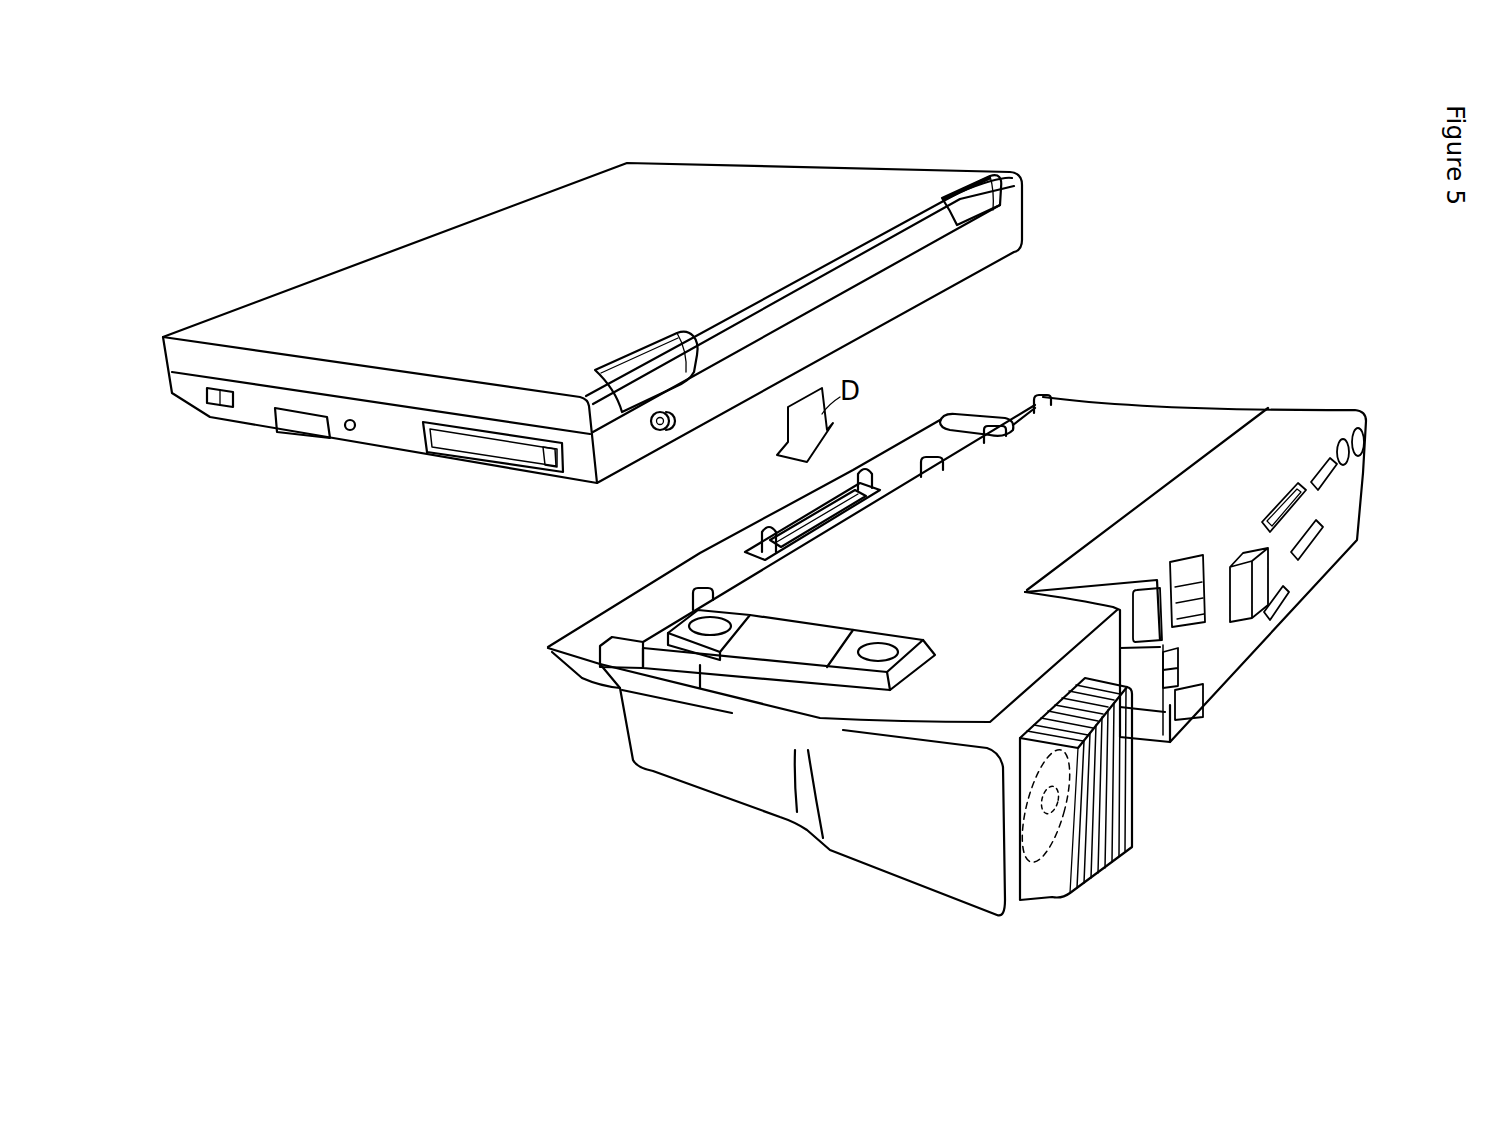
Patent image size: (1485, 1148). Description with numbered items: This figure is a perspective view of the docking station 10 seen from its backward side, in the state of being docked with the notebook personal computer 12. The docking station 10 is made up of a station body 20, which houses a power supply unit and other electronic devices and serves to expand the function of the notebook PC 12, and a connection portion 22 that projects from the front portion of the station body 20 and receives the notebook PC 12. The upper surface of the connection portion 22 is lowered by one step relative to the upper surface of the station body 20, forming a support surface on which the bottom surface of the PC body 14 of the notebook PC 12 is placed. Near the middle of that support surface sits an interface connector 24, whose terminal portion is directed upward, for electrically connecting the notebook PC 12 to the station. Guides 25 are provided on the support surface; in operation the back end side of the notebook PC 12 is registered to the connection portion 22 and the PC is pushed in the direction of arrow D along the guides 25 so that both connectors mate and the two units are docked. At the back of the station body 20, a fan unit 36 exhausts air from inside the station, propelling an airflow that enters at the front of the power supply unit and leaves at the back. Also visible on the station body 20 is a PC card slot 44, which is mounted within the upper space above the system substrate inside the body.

The docking station 10 is at (939, 631).
The notebook personal computer 12 is at (643, 332).
The PC body 14 is at (387, 436).
The station body 20 is at (750, 778).
The connection portion 22 is at (580, 662).
The interface connector 24 is at (800, 513).
The guides 25 is at (975, 437).
The fan unit 36 is at (1040, 833).
The PC card slot 44 is at (1207, 610).